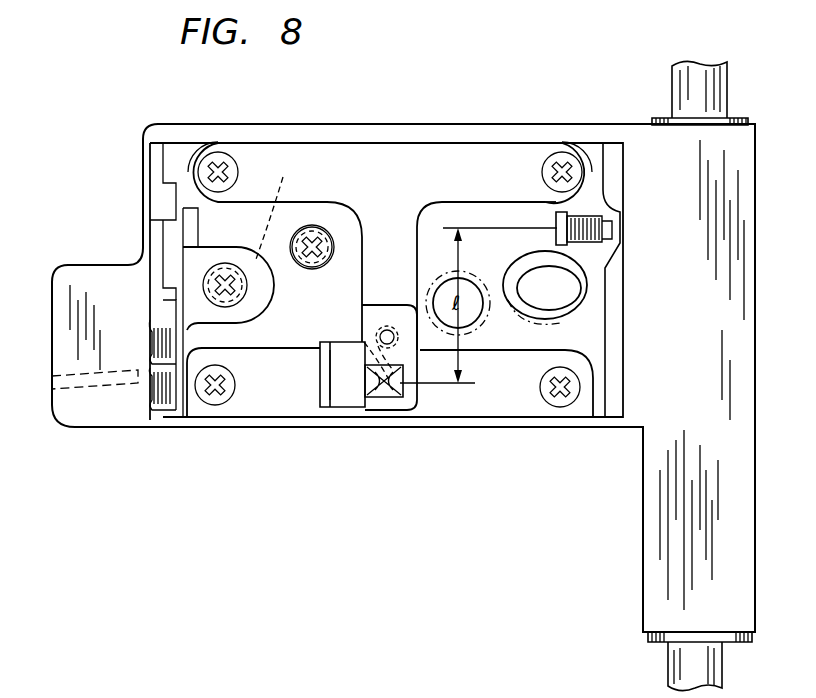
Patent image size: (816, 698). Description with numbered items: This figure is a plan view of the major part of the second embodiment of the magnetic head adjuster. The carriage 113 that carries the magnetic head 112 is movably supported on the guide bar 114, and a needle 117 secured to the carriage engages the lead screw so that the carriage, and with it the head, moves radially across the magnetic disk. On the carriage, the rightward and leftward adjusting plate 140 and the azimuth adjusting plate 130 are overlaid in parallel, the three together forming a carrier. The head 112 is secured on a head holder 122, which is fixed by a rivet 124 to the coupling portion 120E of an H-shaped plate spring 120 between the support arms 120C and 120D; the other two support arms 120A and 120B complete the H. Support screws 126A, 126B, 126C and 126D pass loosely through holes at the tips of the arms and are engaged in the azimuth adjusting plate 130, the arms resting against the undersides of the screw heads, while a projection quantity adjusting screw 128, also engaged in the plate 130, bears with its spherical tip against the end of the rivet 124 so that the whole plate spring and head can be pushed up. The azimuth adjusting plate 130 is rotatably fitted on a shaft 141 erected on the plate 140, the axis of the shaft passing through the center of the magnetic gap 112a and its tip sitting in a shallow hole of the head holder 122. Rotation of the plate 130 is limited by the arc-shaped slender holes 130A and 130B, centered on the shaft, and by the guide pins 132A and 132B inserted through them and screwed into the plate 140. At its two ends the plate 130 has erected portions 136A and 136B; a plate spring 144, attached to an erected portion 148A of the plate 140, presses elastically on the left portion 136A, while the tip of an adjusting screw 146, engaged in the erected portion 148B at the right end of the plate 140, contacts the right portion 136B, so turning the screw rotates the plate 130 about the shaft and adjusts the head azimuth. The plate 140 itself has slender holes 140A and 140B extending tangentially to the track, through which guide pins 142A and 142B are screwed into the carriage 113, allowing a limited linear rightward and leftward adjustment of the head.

The magnetic head 112 is at (383, 400).
The magnetic gap 112a is at (373, 392).
The carriage 113 is at (752, 142).
The guide bar 114 is at (730, 95).
The needle 117 is at (118, 385).
The plate spring 120 is at (407, 150).
The support arm 120A is at (262, 150).
The support arm 120B is at (522, 150).
The support arm 120C is at (537, 413).
The support arm 120D is at (264, 410).
The coupling portion 120E is at (410, 270).
The head holder 122 is at (347, 393).
The rivet 124 is at (376, 325).
The projection quantity adjusting screw 128 is at (385, 358).
The support screw 126A is at (219, 160).
The support screw 126B is at (565, 160).
The support screw 126C is at (565, 405).
The support screw 126D is at (215, 405).
The azimuth adjusting plate 130 is at (296, 205).
The arc-shaped slender hole 130A is at (323, 232).
The arc-shaped slender hole 130B is at (473, 287).
The guide pin 132A is at (335, 225).
The guide pin 132B is at (417, 291).
The erected portion 136A is at (186, 207).
The erected portion 136B is at (607, 265).
The rightward and leftward adjusting plate 140 is at (176, 146).
The slender hole 140A is at (280, 208).
The slender hole 140B is at (522, 295).
The shaft 141 is at (375, 333).
The guide pin 142A is at (229, 260).
The guide pin 142B is at (542, 322).
The plate spring 144 is at (183, 242).
The adjusting screw 146 is at (612, 230).
The erected portion 148A is at (152, 342).
The erected portion 148B is at (623, 178).